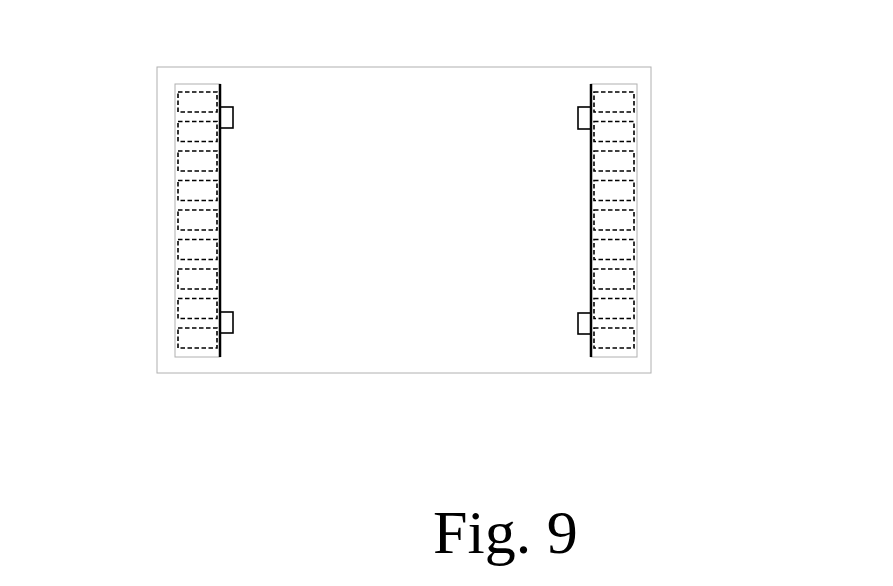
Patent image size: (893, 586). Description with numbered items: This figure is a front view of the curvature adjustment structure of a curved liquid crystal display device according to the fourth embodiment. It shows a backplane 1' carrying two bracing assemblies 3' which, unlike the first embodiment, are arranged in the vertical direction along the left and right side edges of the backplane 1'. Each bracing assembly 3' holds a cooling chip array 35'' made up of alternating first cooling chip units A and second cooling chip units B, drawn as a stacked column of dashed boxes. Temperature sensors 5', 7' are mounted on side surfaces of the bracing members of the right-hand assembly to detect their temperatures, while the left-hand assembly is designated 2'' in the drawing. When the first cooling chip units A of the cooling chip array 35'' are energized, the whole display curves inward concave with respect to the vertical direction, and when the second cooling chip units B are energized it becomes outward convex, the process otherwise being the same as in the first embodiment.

The backplane 1' is at (404, 196).
The left component array strip 2'' is at (136, 220).
The bracing assembly 3' is at (649, 220).
The first temperature sensor 5' is at (649, 91).
The second temperature sensor 7' is at (662, 343).
The cooling chip array 35'' is at (155, 375).